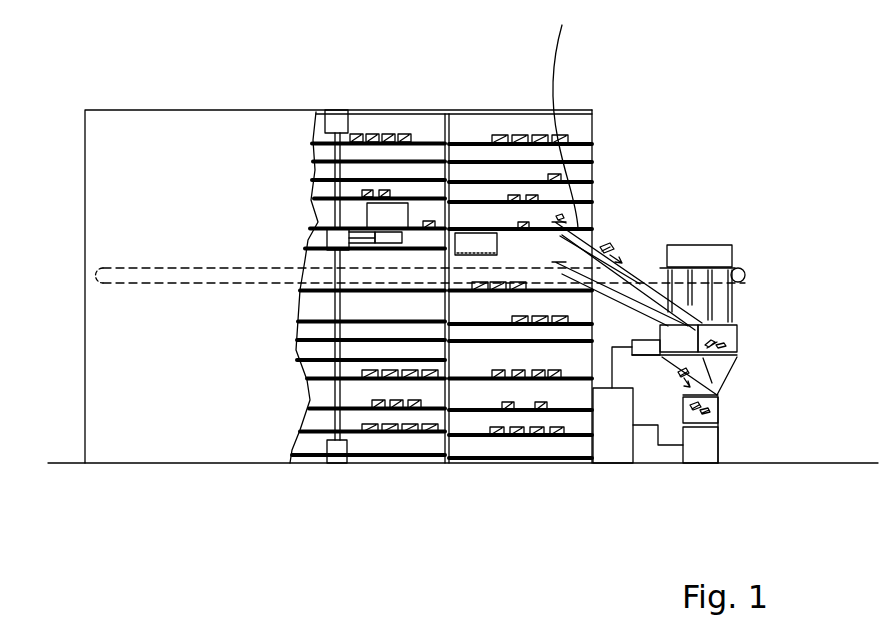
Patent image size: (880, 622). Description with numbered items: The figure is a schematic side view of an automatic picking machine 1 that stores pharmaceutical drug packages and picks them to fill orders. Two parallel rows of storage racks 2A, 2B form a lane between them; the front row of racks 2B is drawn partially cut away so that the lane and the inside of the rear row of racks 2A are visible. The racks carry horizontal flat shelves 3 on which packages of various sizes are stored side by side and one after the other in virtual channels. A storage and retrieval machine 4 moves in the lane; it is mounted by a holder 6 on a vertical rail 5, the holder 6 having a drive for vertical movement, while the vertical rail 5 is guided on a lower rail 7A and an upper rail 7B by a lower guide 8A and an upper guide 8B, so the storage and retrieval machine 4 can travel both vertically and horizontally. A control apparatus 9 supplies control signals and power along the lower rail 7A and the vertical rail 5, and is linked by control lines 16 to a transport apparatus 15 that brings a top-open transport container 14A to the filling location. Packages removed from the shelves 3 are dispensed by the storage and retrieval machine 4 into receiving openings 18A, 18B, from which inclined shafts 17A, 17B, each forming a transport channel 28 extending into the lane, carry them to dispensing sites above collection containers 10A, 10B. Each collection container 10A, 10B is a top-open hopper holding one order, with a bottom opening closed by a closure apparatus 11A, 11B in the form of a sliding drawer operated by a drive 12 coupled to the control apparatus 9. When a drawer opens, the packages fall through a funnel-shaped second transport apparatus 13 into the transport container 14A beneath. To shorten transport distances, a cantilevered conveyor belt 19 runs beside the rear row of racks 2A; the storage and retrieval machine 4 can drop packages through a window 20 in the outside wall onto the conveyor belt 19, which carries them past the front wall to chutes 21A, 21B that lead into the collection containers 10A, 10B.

The automatic picking machine 1 is at (184, 57).
The row of storage racks 2A is at (596, 130).
The row of storage racks 2B is at (84, 146).
The horizontal flat shelves 3 is at (592, 145).
The storage and retrieval machine 4 is at (390, 220).
The vertical rail 5 is at (355, 447).
The holder 6 is at (342, 205).
The lower rail 7A is at (500, 465).
The upper rail 7B is at (576, 110).
The lower guide 8A is at (333, 465).
The upper guide 8B is at (334, 112).
The control apparatus 9 is at (612, 463).
The collection container 10A is at (730, 323).
The collection container 10B is at (740, 340).
The closure apparatus 11A is at (742, 388).
The closure apparatus 11B is at (742, 367).
The drive 12 is at (640, 357).
The second transport apparatus 13 is at (740, 378).
The transport container 14A is at (718, 432).
The transport apparatus 15 is at (707, 450).
The control lines 16 is at (657, 463).
The inclined shaft 17A is at (637, 252).
The inclined shaft 17B is at (735, 255).
The receiving opening 18A is at (597, 236).
The receiving opening 18B is at (597, 213).
The cantilevered conveyor belt 19 is at (137, 283).
The window 20 is at (478, 240).
The chute 21A is at (700, 268).
The chute 21B is at (745, 297).
The transport channel 28 is at (562, 114).